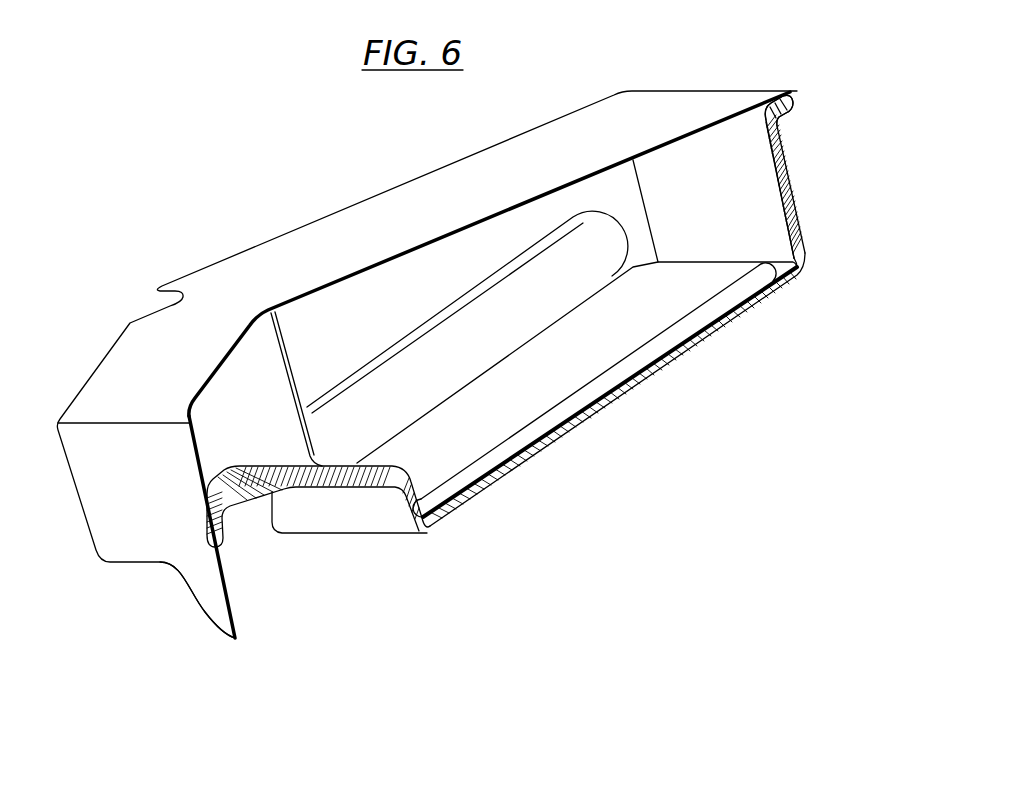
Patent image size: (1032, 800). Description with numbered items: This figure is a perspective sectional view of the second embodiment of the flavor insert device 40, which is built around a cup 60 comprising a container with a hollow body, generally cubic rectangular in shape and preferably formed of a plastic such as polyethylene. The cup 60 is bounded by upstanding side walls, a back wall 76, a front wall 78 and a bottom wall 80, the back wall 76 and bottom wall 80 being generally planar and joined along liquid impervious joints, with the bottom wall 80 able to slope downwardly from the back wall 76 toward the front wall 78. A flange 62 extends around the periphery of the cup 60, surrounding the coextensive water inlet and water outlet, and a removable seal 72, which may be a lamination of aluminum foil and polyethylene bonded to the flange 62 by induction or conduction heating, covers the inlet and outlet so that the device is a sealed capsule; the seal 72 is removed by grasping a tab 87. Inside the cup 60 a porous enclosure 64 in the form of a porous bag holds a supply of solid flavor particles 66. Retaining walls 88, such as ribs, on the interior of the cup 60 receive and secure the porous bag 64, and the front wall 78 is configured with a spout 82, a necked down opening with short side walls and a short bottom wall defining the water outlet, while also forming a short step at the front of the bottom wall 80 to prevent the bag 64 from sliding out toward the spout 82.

The flavor insert device 40 is at (620, 458).
The cup 60 is at (808, 217).
The flange 62 is at (790, 114).
The porous enclosure 64 is at (733, 303).
The solid flavor particles 66 is at (550, 423).
The removable seal 72 is at (690, 100).
The back wall 76 is at (796, 189).
The front wall 78 is at (358, 522).
The bottom wall 80 is at (757, 308).
The spout 82 is at (240, 496).
The tab 87 is at (210, 623).
The retaining walls 88 is at (447, 366).